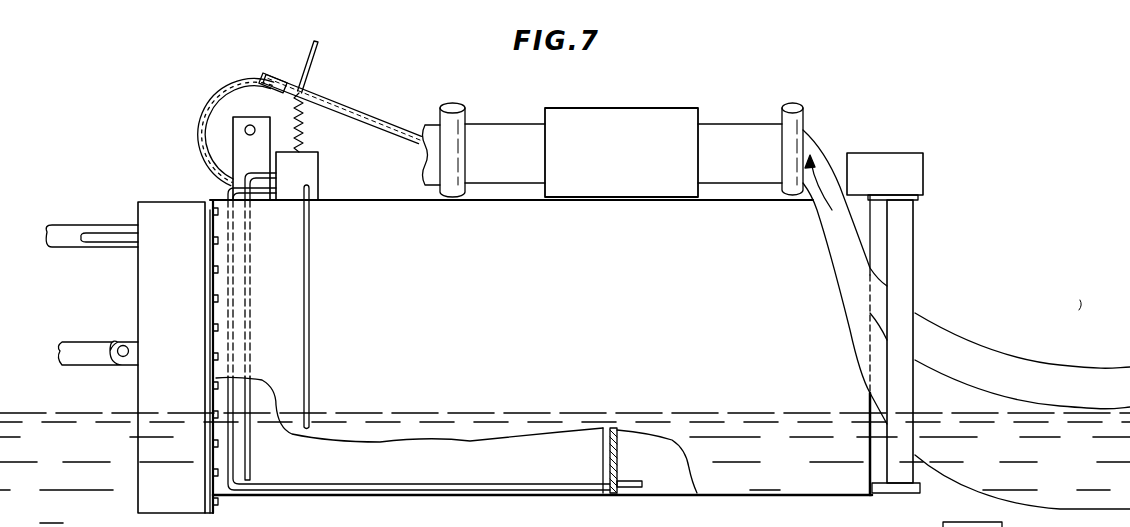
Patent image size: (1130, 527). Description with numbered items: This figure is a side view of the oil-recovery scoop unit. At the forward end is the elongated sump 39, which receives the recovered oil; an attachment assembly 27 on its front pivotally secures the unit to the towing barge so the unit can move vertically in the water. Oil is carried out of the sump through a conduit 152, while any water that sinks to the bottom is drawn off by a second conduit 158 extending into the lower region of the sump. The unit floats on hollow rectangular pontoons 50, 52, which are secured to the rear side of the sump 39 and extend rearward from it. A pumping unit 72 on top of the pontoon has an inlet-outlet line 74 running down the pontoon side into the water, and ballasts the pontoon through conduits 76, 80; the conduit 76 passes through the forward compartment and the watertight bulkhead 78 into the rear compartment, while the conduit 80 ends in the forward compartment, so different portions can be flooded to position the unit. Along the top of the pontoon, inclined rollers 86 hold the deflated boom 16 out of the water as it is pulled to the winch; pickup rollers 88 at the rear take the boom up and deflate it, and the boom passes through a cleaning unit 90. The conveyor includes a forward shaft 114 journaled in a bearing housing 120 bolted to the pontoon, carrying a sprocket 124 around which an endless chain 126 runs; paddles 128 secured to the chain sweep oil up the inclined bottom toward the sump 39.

The boom 16 is at (1078, 356).
The attachment assembly 27 is at (93, 363).
The sump 39 is at (160, 212).
The pontoon 50 is at (563, 321).
The pontoon 52 is at (397, 499).
The pumping unit 72 is at (307, 174).
The inlet-outlet line 74 is at (310, 300).
The conduit 76 is at (237, 336).
The bulkhead 78 is at (618, 463).
The conduit 80 is at (249, 441).
The inclined roller 86 is at (454, 105).
The pickup roller 88 is at (898, 304).
The cleaning unit 90 is at (619, 114).
The forward shaft 114 is at (245, 128).
The bearing housing 120 is at (243, 150).
The sprocket 124 is at (250, 92).
The endless chain 126 is at (363, 116).
The paddle 128 is at (323, 60).
The conduit 152 is at (64, 230).
The conduit 158 is at (104, 240).